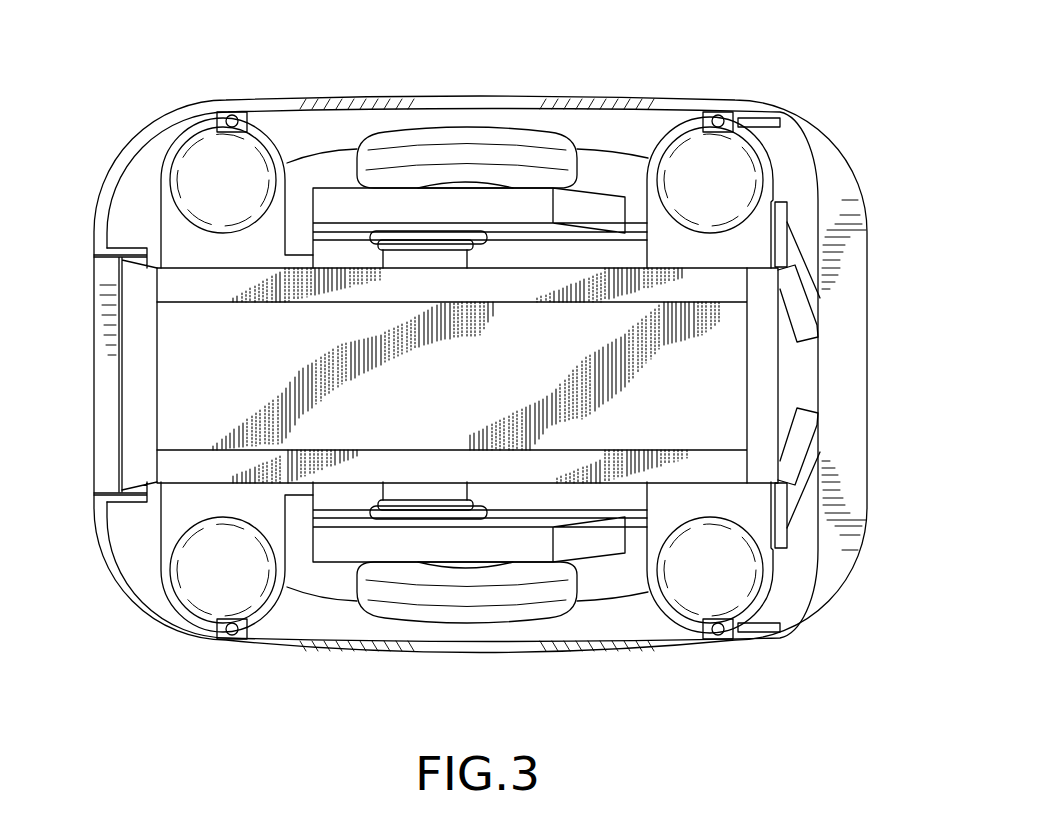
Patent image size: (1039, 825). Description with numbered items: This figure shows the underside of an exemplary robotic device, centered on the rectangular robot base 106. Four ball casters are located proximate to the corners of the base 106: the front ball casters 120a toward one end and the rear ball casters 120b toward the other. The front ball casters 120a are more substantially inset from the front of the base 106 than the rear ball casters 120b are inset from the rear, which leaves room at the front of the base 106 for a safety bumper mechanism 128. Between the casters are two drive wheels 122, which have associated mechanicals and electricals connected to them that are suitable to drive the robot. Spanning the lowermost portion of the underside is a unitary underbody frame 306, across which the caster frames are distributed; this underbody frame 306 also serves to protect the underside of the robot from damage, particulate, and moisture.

The robot base 106 is at (163, 128).
The front ball casters 120a is at (723, 160).
The rear ball casters 120b is at (236, 160).
The drive wheels 122 is at (477, 150).
The safety bumper mechanism 128 is at (805, 292).
The unitary underbody frame 306 is at (253, 363).